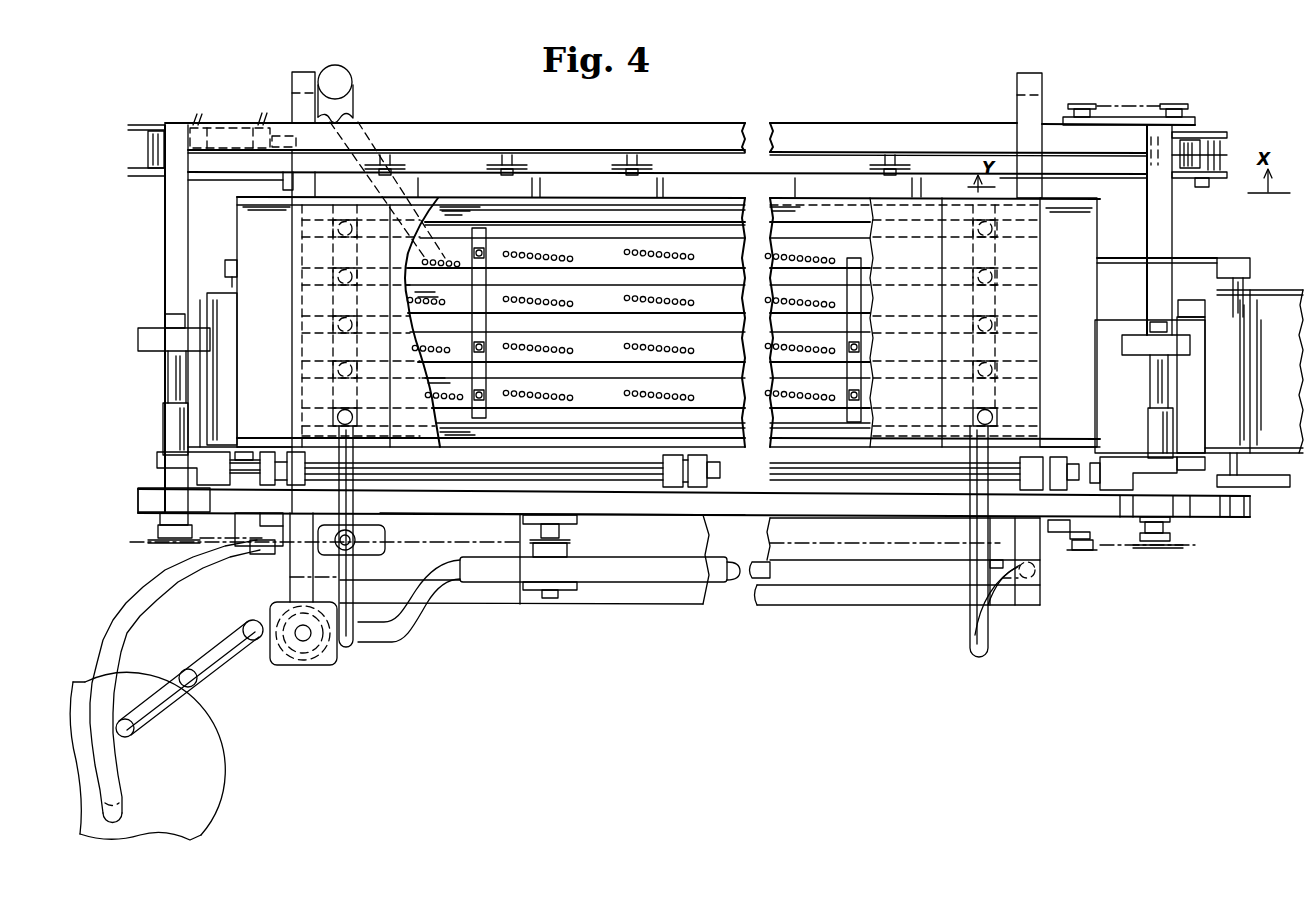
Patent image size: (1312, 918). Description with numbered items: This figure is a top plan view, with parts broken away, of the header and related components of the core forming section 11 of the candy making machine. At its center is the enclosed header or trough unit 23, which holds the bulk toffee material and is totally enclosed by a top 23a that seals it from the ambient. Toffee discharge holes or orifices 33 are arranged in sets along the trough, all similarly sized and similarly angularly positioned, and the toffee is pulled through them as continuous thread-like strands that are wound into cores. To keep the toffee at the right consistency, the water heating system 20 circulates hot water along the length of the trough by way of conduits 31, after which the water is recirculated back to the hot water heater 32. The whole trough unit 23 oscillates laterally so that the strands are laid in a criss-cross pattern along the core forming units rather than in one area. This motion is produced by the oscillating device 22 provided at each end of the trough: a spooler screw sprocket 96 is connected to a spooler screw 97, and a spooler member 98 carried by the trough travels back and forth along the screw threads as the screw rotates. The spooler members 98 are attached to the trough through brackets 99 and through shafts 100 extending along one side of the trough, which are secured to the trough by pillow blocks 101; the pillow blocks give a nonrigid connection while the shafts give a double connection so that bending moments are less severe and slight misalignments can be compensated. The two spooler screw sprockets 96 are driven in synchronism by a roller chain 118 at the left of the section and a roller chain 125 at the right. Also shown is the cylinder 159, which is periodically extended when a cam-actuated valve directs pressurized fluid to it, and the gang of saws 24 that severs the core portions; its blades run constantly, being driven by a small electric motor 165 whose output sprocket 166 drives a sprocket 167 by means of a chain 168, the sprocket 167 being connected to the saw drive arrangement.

The core forming section 11 is at (770, 123).
The gang of saws 24 is at (943, 123).
The cylinder 159 is at (229, 128).
The header or trough unit 23 is at (237, 237).
The top 23a is at (310, 288).
The toffee discharge holes or orifices 33 is at (630, 262).
The conduits 31 is at (733, 276).
The spooler screw 97 is at (170, 373).
The spooler member 98 is at (165, 420).
The oscillating device 22 is at (160, 440).
The brackets 99 is at (158, 462).
The spooler screw sprocket 96 is at (149, 542).
The pillow blocks 101 is at (280, 483).
The shafts 100 is at (452, 482).
The roller chain 118 is at (423, 544).
The roller chain 125 is at (1108, 549).
The water heating system 20 is at (239, 662).
The hot water heater 32 is at (177, 780).
The electric motor 165 is at (1201, 137).
The output sprocket 166 is at (1175, 101).
The sprocket 167 is at (1077, 101).
The chain 168 is at (1126, 106).